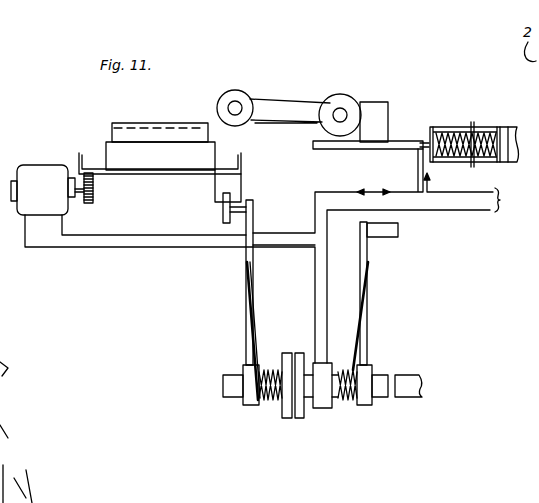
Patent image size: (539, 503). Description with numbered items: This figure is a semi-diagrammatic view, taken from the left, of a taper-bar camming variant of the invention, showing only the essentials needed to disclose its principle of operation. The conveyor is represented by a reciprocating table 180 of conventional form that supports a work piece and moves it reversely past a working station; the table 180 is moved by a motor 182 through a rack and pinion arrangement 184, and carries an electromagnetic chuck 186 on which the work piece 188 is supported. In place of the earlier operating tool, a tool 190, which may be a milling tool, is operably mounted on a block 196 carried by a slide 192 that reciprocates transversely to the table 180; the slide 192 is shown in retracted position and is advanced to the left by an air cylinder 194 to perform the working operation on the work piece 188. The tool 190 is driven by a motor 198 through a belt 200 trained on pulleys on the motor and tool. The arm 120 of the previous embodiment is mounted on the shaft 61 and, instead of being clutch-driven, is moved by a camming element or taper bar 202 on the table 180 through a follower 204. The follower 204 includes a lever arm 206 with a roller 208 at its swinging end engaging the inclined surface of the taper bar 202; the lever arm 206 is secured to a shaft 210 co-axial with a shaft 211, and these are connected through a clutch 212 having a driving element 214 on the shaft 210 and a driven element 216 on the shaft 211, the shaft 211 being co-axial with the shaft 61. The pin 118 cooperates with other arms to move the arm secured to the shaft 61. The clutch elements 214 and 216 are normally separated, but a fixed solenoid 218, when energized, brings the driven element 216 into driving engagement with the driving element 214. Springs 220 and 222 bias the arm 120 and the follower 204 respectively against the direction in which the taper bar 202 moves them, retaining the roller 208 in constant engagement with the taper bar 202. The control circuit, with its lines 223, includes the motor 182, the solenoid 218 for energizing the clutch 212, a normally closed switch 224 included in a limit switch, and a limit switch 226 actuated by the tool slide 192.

The shaft 61 is at (410, 392).
The pin 118 is at (378, 237).
The arm 120 is at (370, 326).
The reciprocating table 180 is at (94, 153).
The motor 182 is at (40, 152).
The rack and pinion arrangement 184 is at (98, 199).
The electromagnetic chuck 186 is at (160, 164).
The work piece 188 is at (138, 130).
The tool 190 is at (236, 96).
The slide 192 is at (340, 150).
The air cylinder 194 is at (496, 127).
The block 196 is at (385, 103).
The motor 198 is at (345, 105).
The belt 200 is at (298, 124).
The taper bar 202 is at (225, 184).
The follower 204 is at (253, 230).
The lever arm 206 is at (251, 257).
The roller 208 is at (222, 218).
The shaft 210 is at (232, 400).
The shaft 211 is at (383, 398).
The clutch 212 is at (292, 425).
The driving element 214 is at (280, 416).
The driven element 216 is at (305, 418).
The fixed solenoid 218 is at (328, 408).
The spring 220 is at (351, 344).
The spring 222 is at (256, 333).
The control line 223 is at (106, 246).
The normally closed switch 224 is at (378, 190).
The limit switch 226 is at (435, 178).